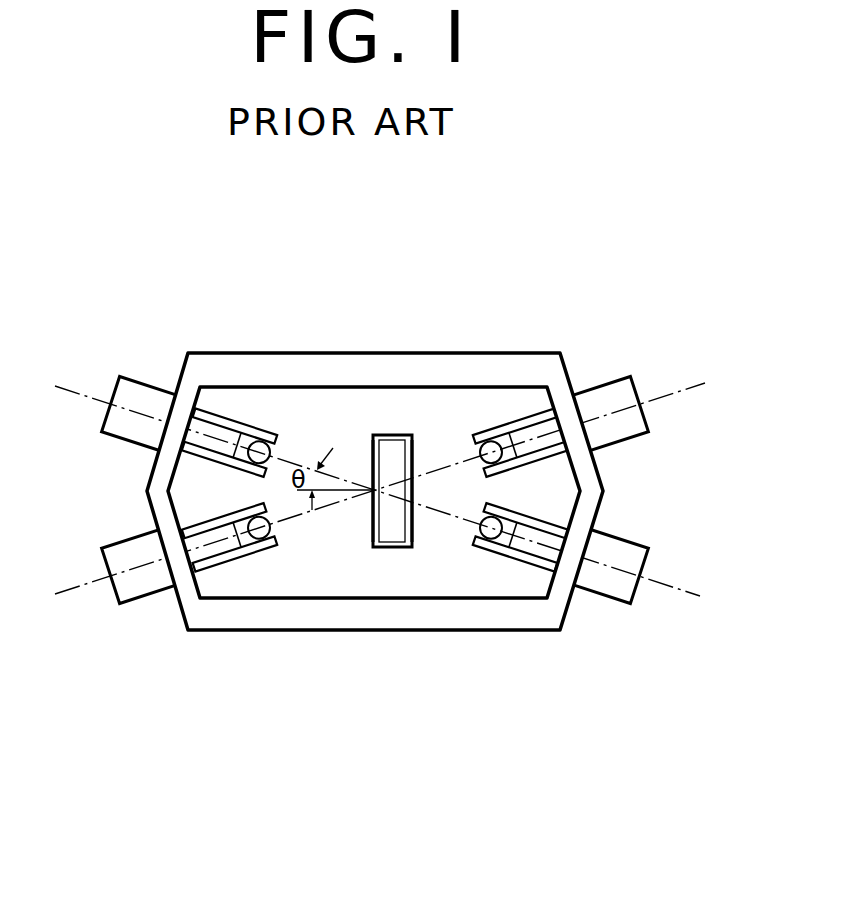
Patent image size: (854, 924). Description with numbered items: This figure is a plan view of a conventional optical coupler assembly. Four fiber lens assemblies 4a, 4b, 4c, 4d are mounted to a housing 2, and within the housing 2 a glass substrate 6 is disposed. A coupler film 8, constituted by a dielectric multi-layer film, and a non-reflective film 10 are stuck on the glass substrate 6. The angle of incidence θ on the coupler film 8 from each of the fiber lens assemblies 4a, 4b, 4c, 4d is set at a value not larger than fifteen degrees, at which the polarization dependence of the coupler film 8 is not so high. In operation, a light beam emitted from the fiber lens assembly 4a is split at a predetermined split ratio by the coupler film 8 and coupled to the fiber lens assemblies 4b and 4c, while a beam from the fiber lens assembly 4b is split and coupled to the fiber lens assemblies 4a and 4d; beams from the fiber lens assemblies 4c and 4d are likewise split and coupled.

The housing 2 is at (464, 353).
The fiber lens assembly 4a is at (226, 412).
The fiber lens assembly 4b is at (227, 563).
The fiber lens assembly 4c is at (533, 567).
The fiber lens assembly 4d is at (521, 412).
The glass substrate 6 is at (390, 545).
The coupler film 8 is at (372, 527).
The non-reflective film 10 is at (420, 540).